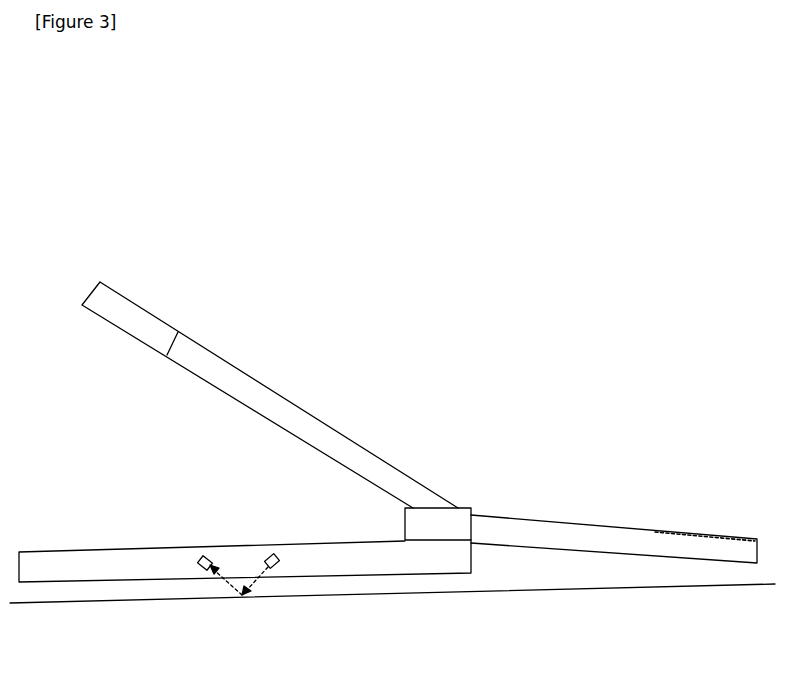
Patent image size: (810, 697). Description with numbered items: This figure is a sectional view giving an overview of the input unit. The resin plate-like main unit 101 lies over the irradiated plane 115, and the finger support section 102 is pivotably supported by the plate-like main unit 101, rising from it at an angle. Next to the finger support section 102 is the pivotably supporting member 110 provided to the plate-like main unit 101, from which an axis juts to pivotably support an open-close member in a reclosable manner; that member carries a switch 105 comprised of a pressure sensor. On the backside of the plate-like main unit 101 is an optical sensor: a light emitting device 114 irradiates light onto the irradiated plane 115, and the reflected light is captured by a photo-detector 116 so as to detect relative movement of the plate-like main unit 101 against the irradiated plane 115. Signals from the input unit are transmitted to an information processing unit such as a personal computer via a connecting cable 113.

The plate-like main unit 101 is at (113, 560).
The finger support section 102 is at (207, 362).
The switch 105 is at (680, 530).
The pivotably supporting member 110 is at (458, 518).
The connecting cable 113 is at (555, 535).
The light emitting device 114 is at (272, 552).
The irradiated plane 115 is at (193, 600).
The photo-detector 116 is at (205, 553).